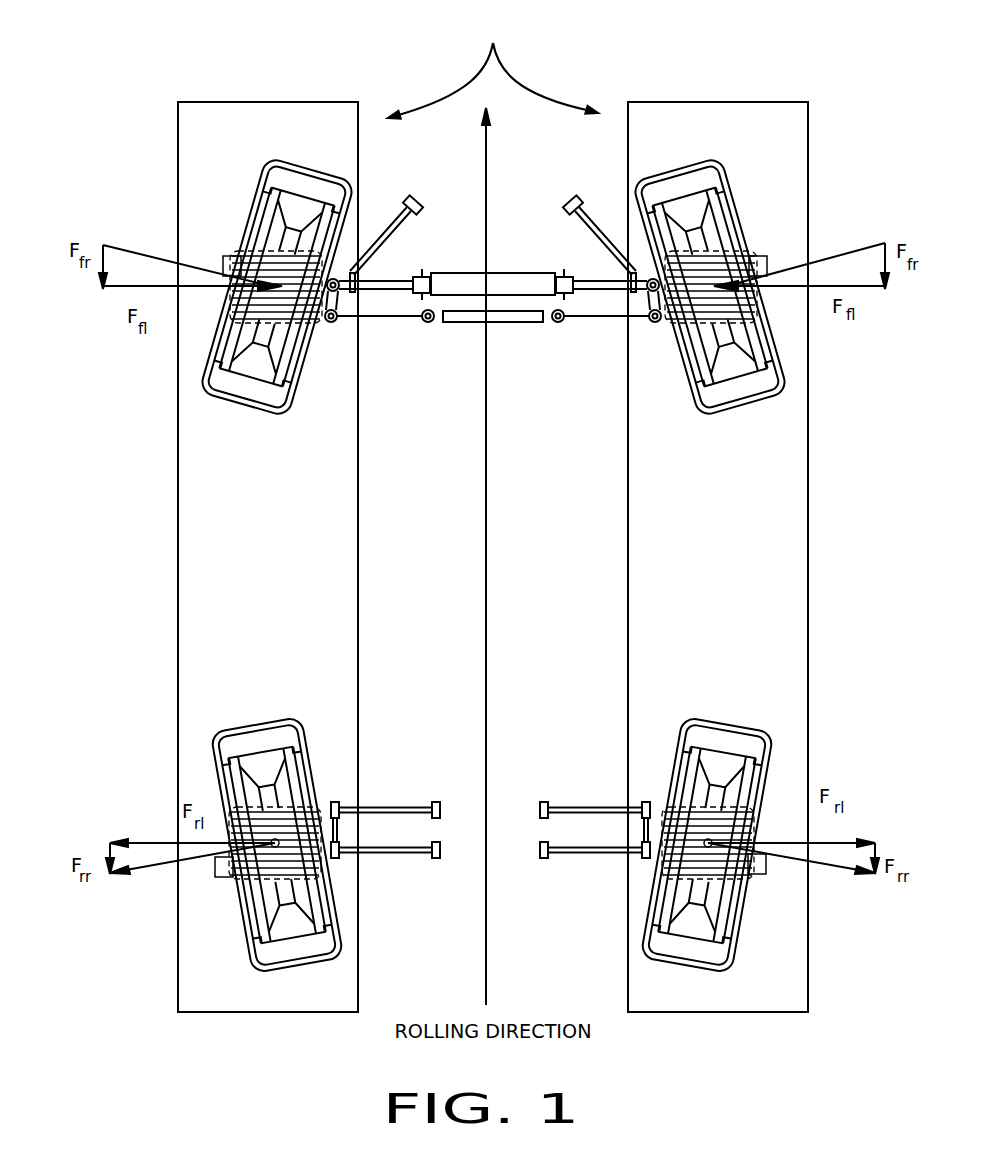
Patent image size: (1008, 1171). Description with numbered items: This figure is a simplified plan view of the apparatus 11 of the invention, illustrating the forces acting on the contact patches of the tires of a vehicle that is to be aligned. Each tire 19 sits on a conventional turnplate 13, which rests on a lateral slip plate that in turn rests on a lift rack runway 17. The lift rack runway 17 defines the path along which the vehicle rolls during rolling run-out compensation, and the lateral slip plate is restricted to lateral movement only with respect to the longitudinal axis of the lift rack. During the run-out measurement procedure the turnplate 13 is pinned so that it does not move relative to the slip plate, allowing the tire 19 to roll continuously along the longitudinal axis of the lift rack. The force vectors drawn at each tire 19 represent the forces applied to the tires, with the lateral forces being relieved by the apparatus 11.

The apparatus 11 is at (493, 65).
The turnplate 13 is at (283, 318).
The lift rack runway 17 is at (247, 512).
The tire 19 is at (320, 172).